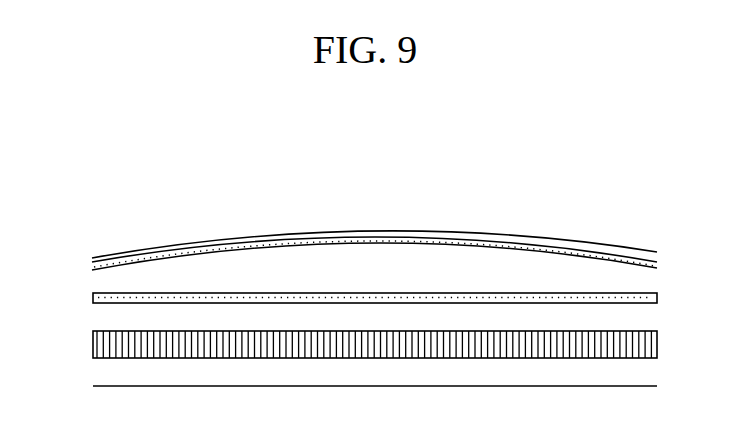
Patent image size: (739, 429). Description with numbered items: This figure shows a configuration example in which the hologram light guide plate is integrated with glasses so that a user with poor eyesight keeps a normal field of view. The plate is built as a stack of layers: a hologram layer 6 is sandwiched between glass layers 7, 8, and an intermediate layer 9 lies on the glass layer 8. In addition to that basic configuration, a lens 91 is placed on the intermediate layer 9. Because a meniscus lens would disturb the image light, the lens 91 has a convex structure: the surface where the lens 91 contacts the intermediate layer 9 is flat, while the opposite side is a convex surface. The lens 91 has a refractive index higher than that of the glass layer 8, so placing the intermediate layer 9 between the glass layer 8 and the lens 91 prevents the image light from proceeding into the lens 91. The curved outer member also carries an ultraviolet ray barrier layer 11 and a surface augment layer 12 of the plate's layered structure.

The ultraviolet ray barrier layer 11 is at (657, 265).
The surface augment layer 12 is at (533, 240).
The lens 91 is at (230, 270).
The intermediate layer 9 is at (93, 303).
The glass layer 8 is at (95, 318).
The hologram layer 6 is at (100, 342).
The glass layer 7 is at (100, 376).